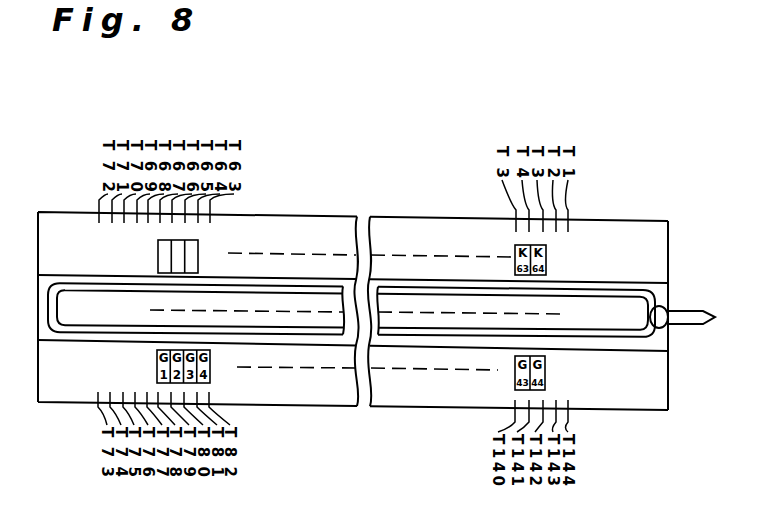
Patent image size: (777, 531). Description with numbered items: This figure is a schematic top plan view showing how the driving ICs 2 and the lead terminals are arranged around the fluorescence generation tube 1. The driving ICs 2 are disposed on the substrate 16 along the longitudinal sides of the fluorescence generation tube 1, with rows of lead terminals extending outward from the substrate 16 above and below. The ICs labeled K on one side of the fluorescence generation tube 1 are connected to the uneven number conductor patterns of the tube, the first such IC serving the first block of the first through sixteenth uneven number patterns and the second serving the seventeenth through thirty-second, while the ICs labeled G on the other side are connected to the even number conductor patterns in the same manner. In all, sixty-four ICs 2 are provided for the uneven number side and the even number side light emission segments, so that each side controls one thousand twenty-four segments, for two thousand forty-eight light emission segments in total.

The fluorescence generation tube 1 is at (263, 303).
The driving ICs 2 is at (200, 239).
The substrate 16 is at (413, 219).